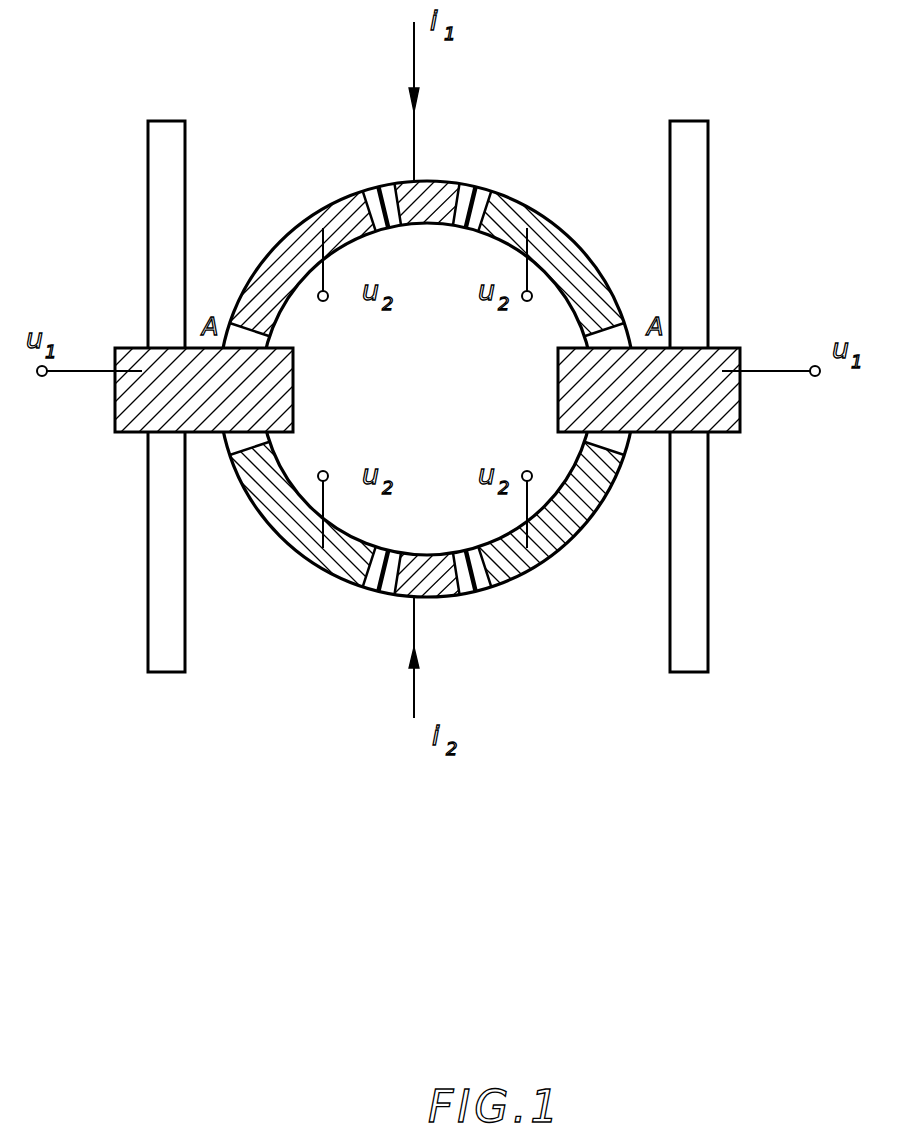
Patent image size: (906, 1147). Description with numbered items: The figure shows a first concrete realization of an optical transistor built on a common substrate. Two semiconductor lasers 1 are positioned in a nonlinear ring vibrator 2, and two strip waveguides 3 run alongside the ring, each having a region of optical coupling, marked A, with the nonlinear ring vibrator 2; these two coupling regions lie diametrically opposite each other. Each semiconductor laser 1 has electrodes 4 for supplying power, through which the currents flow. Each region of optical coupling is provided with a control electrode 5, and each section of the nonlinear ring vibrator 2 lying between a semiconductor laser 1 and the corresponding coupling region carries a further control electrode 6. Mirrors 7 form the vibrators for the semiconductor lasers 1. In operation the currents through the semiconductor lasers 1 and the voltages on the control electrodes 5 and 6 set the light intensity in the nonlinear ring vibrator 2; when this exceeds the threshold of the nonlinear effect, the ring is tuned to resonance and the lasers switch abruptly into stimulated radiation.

The semiconductor laser 1 is at (465, 185).
The nonlinear ring vibrator 2 is at (378, 195).
The strip waveguide 3 is at (165, 172).
The electrode 4 is at (438, 183).
The control electrode 5 is at (130, 432).
The control electrode 6 is at (290, 245).
The mirror 7 is at (483, 197).